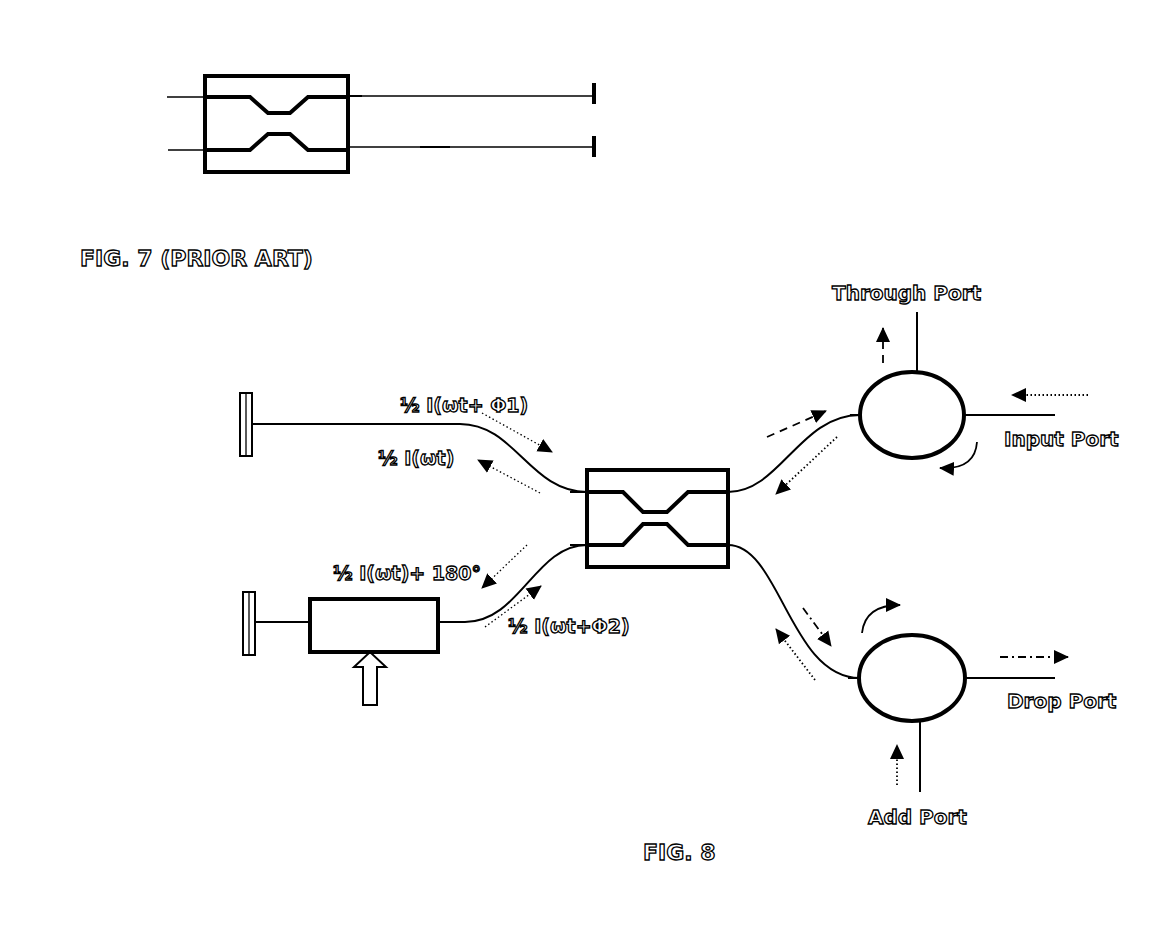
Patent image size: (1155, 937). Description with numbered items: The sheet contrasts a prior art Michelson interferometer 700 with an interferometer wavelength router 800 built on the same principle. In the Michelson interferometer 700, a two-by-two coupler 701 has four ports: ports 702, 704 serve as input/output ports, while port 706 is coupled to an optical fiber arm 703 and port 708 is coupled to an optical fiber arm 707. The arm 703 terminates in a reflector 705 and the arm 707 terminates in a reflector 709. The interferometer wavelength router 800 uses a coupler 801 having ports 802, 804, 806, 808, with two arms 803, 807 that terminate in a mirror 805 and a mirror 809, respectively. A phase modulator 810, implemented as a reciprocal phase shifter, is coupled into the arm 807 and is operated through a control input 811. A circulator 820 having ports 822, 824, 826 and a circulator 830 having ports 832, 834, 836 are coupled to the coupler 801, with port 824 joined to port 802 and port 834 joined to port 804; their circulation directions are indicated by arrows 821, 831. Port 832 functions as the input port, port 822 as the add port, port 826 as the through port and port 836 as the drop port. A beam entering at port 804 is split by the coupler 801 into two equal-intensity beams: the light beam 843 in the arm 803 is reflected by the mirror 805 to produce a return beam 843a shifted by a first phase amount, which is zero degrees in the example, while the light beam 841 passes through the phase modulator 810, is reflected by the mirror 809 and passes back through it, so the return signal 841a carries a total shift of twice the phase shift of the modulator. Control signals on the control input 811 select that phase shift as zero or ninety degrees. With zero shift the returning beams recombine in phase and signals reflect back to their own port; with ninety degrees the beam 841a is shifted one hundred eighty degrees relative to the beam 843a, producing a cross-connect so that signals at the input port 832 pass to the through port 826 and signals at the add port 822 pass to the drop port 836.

In FIG. 7, the Michelson interferometer 700 is at (218, 228).
In FIG. 7, the 2×2 coupler 701 is at (283, 88).
In FIG. 7, the port 702 is at (167, 97).
In FIG. 7, the optical fiber arm 703 is at (388, 93).
In FIG. 7, the port 704 is at (180, 151).
In FIG. 7, the reflector 705 is at (598, 93).
In FIG. 7, the port 706 is at (349, 97).
In FIG. 7, the optical fiber arm 707 is at (435, 147).
In FIG. 7, the port 708 is at (362, 148).
In FIG. 7, the reflector 709 is at (592, 150).
In FIG. 8, the interferometer wavelength router 800 is at (678, 706).
In FIG. 8, the coupler 801 is at (687, 490).
In FIG. 8, the port 802 is at (735, 547).
In FIG. 8, the arm 803 is at (312, 420).
In FIG. 8, the port 804 is at (737, 486).
In FIG. 8, the mirror 805 is at (252, 412).
In FIG. 8, the port 806 is at (585, 545).
In FIG. 8, the arm 807 is at (462, 622).
In FIG. 8, the port 808 is at (585, 490).
In FIG. 8, the mirror 809 is at (256, 593).
In FIG. 8, the phase modulator 810 is at (415, 630).
In FIG. 8, the control input 811 is at (378, 700).
In FIG. 8, the circulator 820 is at (920, 697).
In FIG. 8, the arrow 821 is at (883, 602).
In FIG. 8, the port 822 is at (922, 721).
In FIG. 8, the port 824 is at (860, 680).
In FIG. 8, the port 826 is at (965, 676).
In FIG. 8, the circulator 830 is at (905, 428).
In FIG. 8, the arrow 831 is at (966, 459).
In FIG. 8, the port 832 is at (965, 415).
In FIG. 8, the port 834 is at (858, 412).
In FIG. 8, the port 836 is at (917, 372).
In FIG. 8, the light beam 841 is at (508, 548).
In FIG. 8, the return signal 841a is at (530, 598).
In FIG. 8, the light beam 843 is at (505, 475).
In FIG. 8, the return beam 843a is at (530, 443).